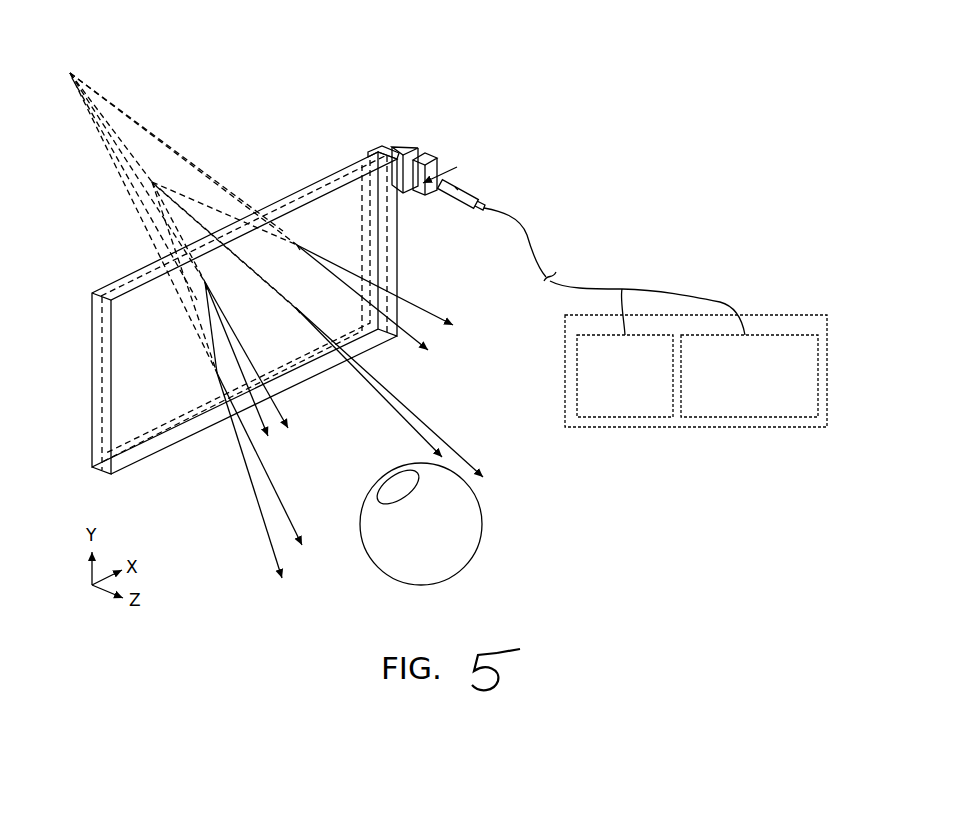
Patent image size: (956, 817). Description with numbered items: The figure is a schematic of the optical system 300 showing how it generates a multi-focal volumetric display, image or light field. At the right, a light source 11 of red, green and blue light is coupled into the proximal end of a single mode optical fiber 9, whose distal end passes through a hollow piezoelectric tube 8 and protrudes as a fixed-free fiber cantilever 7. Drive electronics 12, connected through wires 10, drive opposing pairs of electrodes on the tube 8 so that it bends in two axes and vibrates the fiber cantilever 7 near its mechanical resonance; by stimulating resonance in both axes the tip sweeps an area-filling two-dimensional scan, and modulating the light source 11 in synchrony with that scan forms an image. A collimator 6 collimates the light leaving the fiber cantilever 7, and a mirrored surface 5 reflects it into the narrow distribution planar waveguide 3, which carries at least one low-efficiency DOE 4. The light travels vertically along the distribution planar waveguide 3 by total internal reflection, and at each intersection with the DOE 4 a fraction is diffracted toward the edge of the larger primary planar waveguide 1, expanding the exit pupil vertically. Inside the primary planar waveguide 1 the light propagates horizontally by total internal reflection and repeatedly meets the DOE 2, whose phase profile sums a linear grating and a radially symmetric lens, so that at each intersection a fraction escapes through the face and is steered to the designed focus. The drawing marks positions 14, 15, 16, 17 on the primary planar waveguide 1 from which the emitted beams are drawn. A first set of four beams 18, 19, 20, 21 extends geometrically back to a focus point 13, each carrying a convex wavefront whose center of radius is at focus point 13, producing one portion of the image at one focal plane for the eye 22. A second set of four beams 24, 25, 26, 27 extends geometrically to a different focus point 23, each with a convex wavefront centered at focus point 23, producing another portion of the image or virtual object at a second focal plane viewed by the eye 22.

The optical system 300 is at (401, 2).
The primary planar waveguide 1 is at (123, 296).
The DOE 2 is at (318, 190).
The distribution planar waveguide 3 is at (372, 150).
The DOE 4 is at (393, 261).
The mirrored surface 5 is at (400, 146).
The collimator 6 is at (430, 150).
The fiber cantilever 7 is at (446, 167).
The piezoelectric tube 8 is at (463, 198).
The single mode optical fiber 9 is at (615, 291).
The wires 10 is at (700, 306).
The light source 11 is at (627, 418).
The drive electronics 12 is at (745, 418).
The focus point 13 is at (74, 74).
The first exit point 14 is at (208, 293).
The second exit point 15 is at (213, 368).
The third exit point 16 is at (300, 246).
The fourth exit point 17 is at (296, 310).
The beam 18 is at (292, 430).
The beam 19 is at (304, 546).
The beam 20 is at (432, 352).
The beam 21 is at (440, 458).
The eye 22 is at (411, 533).
The focus point 23 is at (152, 182).
The beam 24 is at (272, 439).
The beam 25 is at (284, 579).
The beam 26 is at (457, 326).
The beam 27 is at (487, 478).